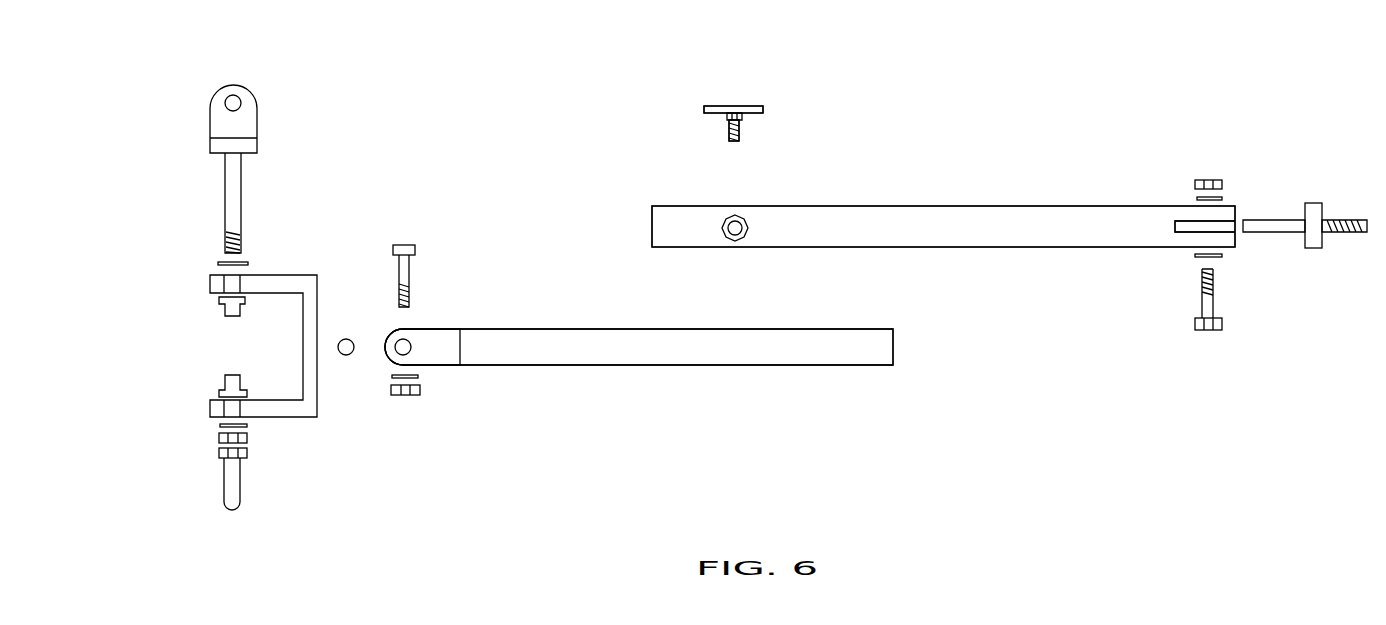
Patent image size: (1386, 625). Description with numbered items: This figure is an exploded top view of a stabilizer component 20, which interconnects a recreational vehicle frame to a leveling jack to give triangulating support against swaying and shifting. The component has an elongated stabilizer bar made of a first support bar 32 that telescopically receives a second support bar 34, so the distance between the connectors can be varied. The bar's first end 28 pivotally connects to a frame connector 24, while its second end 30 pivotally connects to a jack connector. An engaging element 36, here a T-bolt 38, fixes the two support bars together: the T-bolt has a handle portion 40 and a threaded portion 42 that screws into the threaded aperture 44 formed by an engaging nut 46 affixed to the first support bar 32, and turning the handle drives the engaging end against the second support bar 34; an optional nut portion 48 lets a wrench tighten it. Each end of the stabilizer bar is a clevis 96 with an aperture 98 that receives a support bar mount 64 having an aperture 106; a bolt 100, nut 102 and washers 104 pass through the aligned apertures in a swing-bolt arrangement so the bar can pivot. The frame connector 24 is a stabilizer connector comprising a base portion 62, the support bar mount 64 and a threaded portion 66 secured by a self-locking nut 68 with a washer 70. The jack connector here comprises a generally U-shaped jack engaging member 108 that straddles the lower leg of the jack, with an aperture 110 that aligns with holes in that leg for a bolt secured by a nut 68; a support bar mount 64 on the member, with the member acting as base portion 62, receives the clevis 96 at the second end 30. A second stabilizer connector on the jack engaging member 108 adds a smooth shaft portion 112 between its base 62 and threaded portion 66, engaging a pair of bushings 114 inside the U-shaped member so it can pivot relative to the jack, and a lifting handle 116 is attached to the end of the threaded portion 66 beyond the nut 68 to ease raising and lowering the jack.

The stabilizer component 20 is at (943, 141).
The frame connector 24 is at (1348, 135).
The first end 28 is at (1166, 186).
The second end 30 is at (444, 423).
The first support bar 32 is at (1014, 248).
The second support bar 34 is at (740, 366).
The engaging element 36 is at (717, 86).
The T-bolt 38 is at (735, 100).
The handle portion 40 is at (704, 110).
The threaded portion 42 is at (740, 130).
The threaded aperture 44 is at (728, 235).
The engaging nut 46 is at (731, 143).
The nut portion 48 is at (744, 237).
The base portion 62 is at (767, 251).
The support bar mount 64 is at (210, 132).
The threaded portion 66 is at (226, 243).
The nut 68 is at (247, 452).
The washer 70 is at (249, 263).
The clevis 96 is at (432, 347).
The aperture 98 is at (411, 341).
The bolt 100 is at (410, 263).
The nut 102 is at (404, 396).
The washers 104 is at (418, 378).
The aperture 106 is at (240, 101).
The jack engaging member 108 is at (317, 415).
The aperture 110 is at (212, 284).
The shaft portion 112 is at (242, 193).
The bushings 114 is at (225, 385).
The lifting handle 116 is at (241, 500).